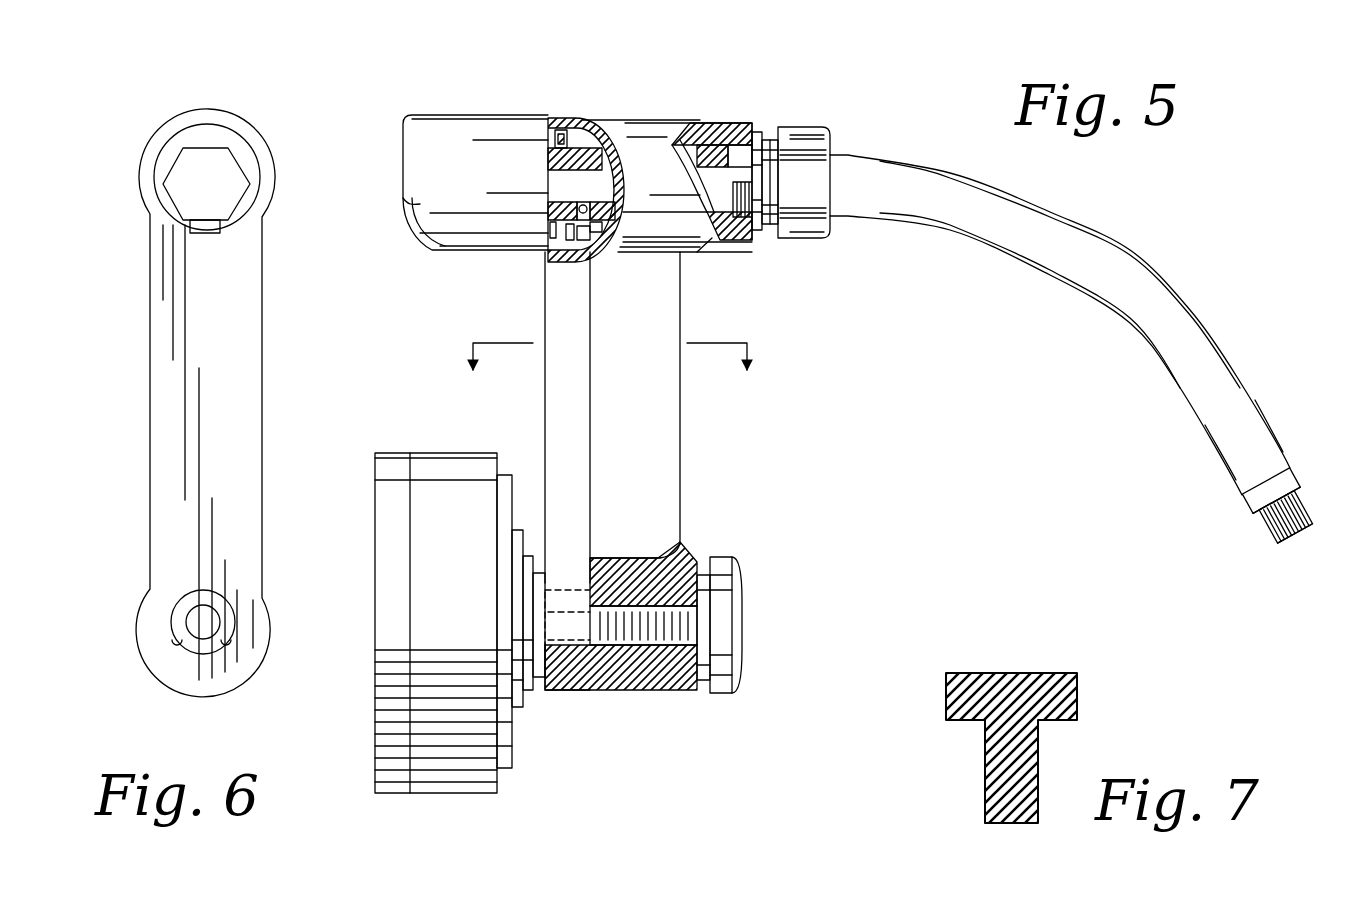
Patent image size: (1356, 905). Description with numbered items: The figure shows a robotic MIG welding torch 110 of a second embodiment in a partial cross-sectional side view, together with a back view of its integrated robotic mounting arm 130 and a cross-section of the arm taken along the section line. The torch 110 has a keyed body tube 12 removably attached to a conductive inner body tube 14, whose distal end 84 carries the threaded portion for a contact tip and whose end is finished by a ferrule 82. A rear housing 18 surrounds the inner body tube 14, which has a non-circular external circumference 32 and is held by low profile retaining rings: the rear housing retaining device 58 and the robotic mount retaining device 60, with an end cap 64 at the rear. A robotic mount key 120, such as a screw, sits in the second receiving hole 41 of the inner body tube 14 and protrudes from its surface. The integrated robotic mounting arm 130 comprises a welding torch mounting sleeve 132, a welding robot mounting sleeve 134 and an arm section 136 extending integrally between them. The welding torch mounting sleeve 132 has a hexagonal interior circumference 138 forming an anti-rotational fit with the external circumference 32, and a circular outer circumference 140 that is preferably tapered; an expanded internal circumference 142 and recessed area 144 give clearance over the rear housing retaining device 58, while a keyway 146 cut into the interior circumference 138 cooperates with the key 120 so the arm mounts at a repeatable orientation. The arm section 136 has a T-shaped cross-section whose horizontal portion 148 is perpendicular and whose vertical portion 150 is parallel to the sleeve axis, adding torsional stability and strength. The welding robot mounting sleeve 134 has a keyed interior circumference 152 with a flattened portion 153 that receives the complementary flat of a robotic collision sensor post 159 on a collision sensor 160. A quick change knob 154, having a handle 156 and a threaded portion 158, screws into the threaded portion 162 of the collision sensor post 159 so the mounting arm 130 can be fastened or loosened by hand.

In FIG. 5, the keyed body tube 12 is at (1128, 248).
In FIG. 5, the conductive inner body tube 14 is at (758, 245).
In FIG. 5, the rear housing 18 is at (505, 114).
In FIG. 5, the external circumference 32 is at (689, 137).
In FIG. 5, the second receiving hole 41 is at (580, 203).
In FIG. 5, the rear housing retaining device 58 is at (557, 131).
In FIG. 5, the robotic mount retaining device 60 is at (775, 240).
In FIG. 5, the end cap 64 is at (780, 128).
In FIG. 5, the hose ferrule 82 is at (1298, 505).
In FIG. 5, the distal end 84 is at (1296, 545).
In FIG. 5, the robotic torch 110 is at (778, 57).
In FIG. 5, the robotic mount key 120 is at (552, 252).
In FIG. 5, the integrated robotic mounting arm 130 is at (692, 326).
In FIG. 5, the welding torch mounting sleeve 132 is at (690, 122).
In FIG. 6, the welding torch mounting sleeve 132 is at (268, 188).
In FIG. 5, the welding robot mounting sleeve 134 is at (622, 692).
In FIG. 5, the arm section 136 is at (665, 452).
In FIG. 5, the interior circumference 138 is at (717, 250).
In FIG. 6, the interior circumference 138 is at (232, 160).
In FIG. 6, the circular outer circumference 140 is at (204, 70).
In FIG. 5, the expanded internal circumference 142 is at (560, 118).
In FIG. 5, the recessed area 144 is at (596, 120).
In FIG. 5, the keyway 146 is at (586, 262).
In FIG. 7, the horizontal portion 148 is at (1032, 672).
In FIG. 7, the vertical portion 150 is at (984, 782).
In FIG. 6, the keyed interior circumference 152 is at (232, 652).
In FIG. 6, the flattened portion 153 is at (182, 648).
In FIG. 5, the quick change knob 154 is at (748, 576).
In FIG. 5, the handle 156 is at (744, 642).
In FIG. 5, the threaded portion 158 is at (670, 692).
In FIG. 5, the robotic collision sensor post 159 is at (606, 692).
In FIG. 5, the collision sensor 160 is at (375, 483).
In FIG. 5, the threaded portion 162 is at (652, 560).